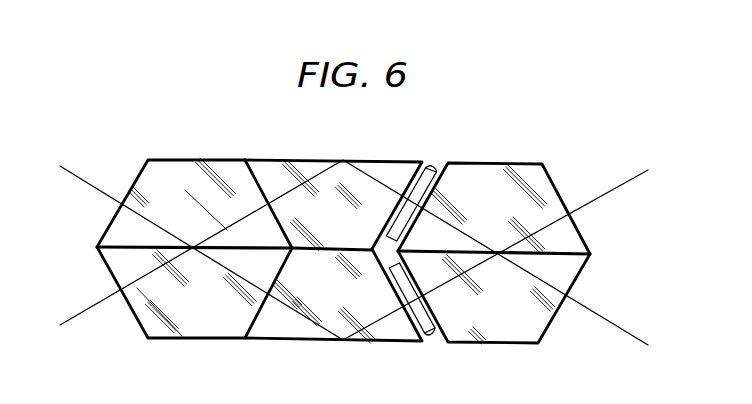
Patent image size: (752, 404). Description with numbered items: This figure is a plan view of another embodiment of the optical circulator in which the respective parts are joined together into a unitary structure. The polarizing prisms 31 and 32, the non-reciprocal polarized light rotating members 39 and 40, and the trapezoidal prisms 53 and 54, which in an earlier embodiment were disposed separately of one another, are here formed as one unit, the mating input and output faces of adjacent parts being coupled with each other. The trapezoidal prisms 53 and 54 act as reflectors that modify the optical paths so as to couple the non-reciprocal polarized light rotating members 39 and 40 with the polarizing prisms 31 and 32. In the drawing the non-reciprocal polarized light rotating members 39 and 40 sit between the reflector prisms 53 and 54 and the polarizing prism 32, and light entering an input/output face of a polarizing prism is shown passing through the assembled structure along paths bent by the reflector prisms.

The polarizing prism 31 is at (188, 339).
The polarizing prism 32 is at (510, 344).
The non-reciprocal polarized light rotating member 39 is at (433, 166).
The non-reciprocal polarized light rotating member 40 is at (429, 337).
The trapezoidal prism 53 is at (385, 163).
The trapezoidal prism 54 is at (296, 340).